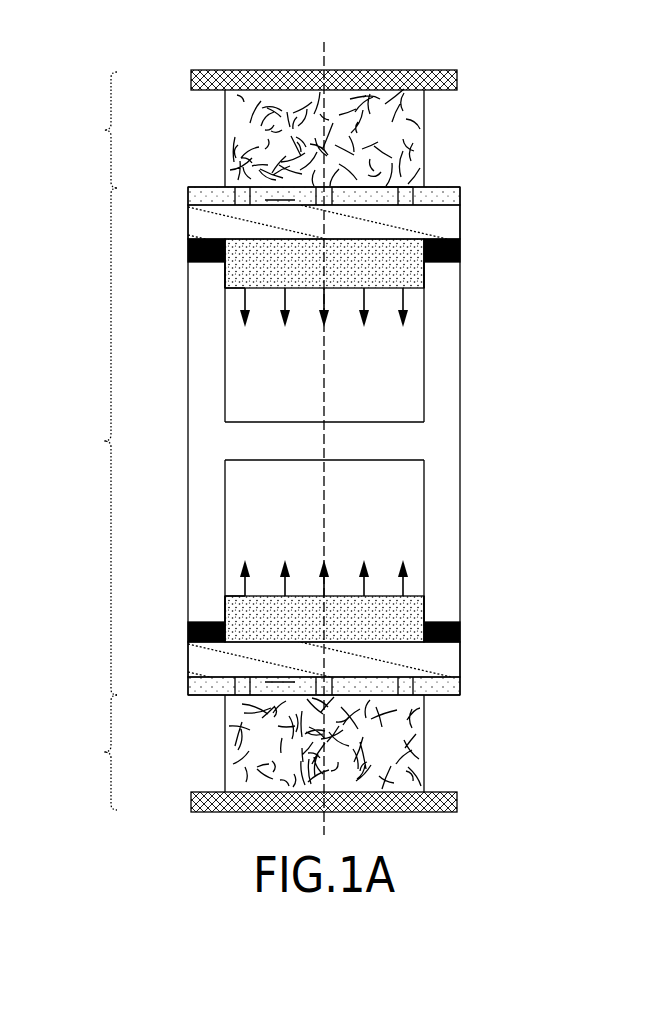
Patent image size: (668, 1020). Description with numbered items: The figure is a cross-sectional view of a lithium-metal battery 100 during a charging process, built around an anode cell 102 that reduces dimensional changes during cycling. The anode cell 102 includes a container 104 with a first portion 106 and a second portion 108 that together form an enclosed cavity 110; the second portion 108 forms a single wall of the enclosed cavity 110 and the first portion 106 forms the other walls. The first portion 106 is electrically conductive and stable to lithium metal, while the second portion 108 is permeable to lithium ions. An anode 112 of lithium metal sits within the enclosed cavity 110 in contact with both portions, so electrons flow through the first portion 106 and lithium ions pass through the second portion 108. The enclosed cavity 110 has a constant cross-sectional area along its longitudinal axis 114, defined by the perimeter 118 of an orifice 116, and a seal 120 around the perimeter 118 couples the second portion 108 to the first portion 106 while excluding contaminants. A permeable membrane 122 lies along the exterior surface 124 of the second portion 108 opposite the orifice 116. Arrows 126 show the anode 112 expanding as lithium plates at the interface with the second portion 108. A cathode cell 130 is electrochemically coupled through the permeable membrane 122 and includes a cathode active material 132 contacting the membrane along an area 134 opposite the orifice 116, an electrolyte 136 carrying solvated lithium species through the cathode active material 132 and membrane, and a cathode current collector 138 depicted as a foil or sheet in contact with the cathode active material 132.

The lithium-metal battery 100 is at (560, 80).
The anode cell 102 is at (91, 441).
The container 104 is at (460, 440).
The first portion 106 is at (460, 340).
The second portion 108 is at (460, 222).
The enclosed cavity 110 is at (402, 362).
The anode 112 is at (230, 300).
The longitudinal axis 114 is at (326, 390).
The orifice 116 is at (440, 285).
The perimeter 118 is at (430, 268).
The seal 120 is at (460, 250).
The permeable membrane 122 is at (460, 192).
The exterior surface 124 is at (280, 205).
The arrows 126 is at (283, 294).
The cathode cell 130 is at (90, 441).
The cathode active material 132 is at (427, 120).
The area 134 is at (377, 187).
The electrolyte 136 is at (347, 100).
The cathode current collector 138 is at (270, 70).